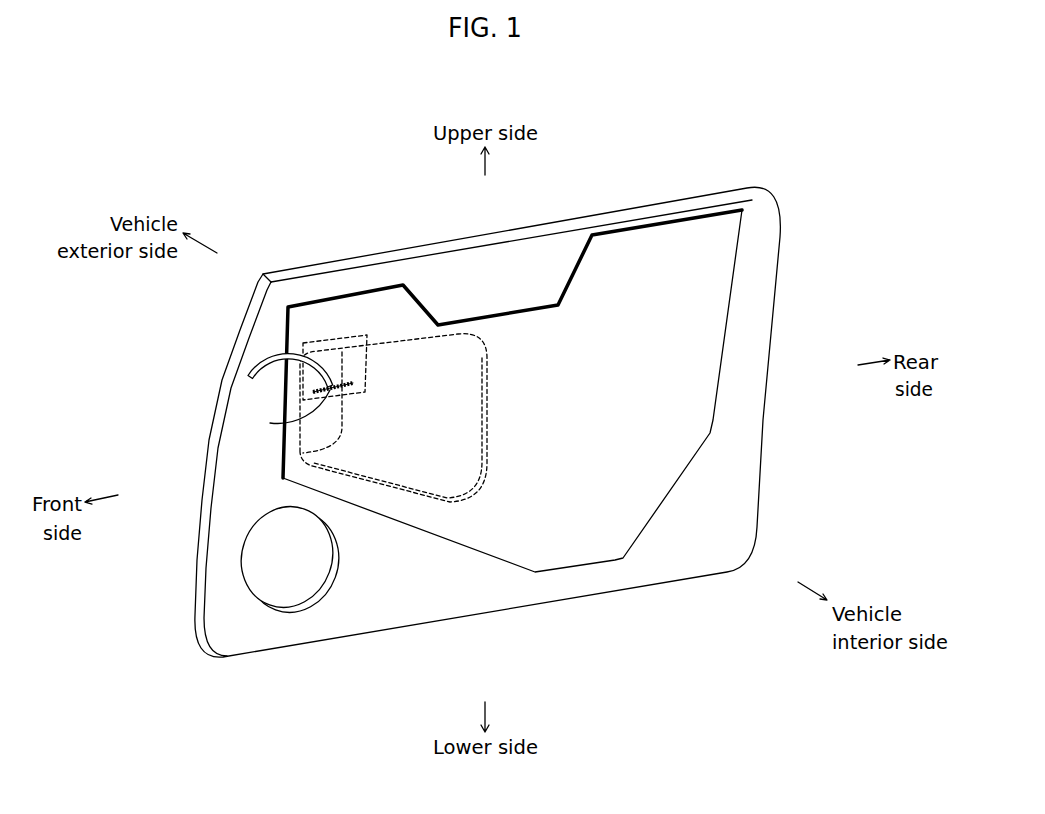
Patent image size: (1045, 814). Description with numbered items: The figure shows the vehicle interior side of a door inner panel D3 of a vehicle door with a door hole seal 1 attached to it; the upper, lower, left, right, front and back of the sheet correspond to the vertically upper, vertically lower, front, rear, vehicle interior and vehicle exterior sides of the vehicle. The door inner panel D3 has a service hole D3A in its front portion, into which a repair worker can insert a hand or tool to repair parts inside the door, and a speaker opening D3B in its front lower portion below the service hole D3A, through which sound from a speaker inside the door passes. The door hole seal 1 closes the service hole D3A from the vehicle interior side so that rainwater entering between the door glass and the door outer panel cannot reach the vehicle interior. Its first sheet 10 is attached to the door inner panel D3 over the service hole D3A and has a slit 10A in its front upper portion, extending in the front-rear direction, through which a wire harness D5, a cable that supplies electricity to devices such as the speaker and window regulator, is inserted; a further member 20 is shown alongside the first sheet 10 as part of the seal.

The door hole seal 1 is at (180, 273).
The first sheet 10 is at (307, 317).
The attachment member 20 is at (303, 352).
The slit 10A is at (310, 417).
The door inner panel D3 is at (760, 312).
The service hole D3A is at (487, 480).
The speaker opening D3B is at (313, 593).
The wire harness D5 is at (255, 370).